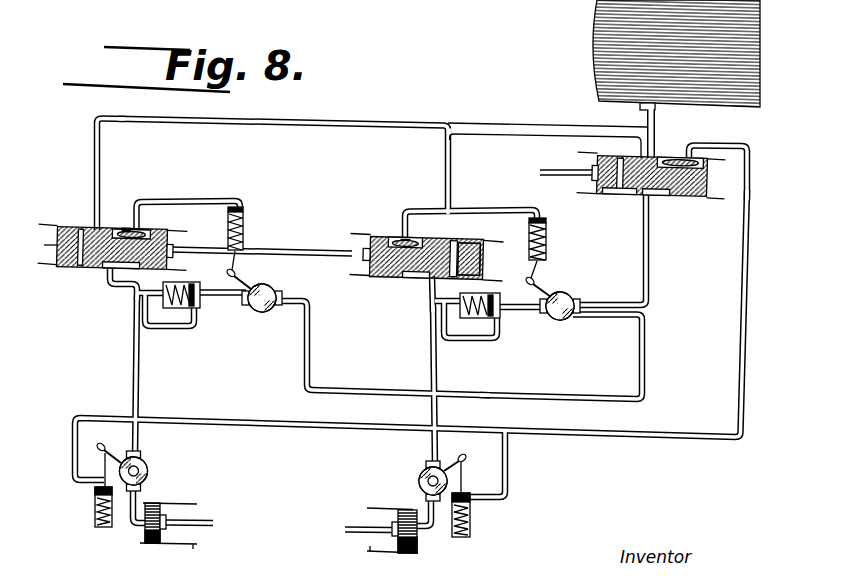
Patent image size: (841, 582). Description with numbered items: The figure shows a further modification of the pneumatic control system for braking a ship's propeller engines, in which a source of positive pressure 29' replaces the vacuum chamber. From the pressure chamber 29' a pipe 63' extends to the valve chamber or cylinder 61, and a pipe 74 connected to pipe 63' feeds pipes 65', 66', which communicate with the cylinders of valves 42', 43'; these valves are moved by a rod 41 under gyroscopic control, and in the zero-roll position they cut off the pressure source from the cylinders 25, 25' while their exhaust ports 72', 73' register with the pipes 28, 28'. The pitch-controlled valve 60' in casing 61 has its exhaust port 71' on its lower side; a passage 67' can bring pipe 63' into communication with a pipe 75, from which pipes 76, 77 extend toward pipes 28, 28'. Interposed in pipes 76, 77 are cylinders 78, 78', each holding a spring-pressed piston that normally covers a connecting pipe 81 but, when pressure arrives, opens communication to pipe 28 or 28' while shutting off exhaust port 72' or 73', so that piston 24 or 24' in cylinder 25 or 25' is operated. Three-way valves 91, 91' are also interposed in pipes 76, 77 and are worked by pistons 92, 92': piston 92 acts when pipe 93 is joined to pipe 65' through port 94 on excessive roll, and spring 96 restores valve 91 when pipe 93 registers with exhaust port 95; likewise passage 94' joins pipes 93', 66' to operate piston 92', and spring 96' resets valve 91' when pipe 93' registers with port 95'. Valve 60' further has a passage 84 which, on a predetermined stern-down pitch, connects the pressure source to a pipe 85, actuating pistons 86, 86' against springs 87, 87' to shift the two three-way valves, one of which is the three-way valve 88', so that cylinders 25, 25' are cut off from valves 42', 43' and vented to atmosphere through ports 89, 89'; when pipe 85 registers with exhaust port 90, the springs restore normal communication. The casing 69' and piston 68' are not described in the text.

The source of positive pressure 29' is at (676, 53).
The pipe 63' is at (627, 130).
The pipe 74 is at (390, 122).
The pipe 66' is at (118, 175).
The pipe 65' is at (547, 142).
The pipe 93' is at (189, 205).
The pipe 93 is at (471, 213).
The piston 92' is at (253, 229).
The piston 92 is at (555, 243).
The spring 96' is at (255, 232).
The spring 96 is at (553, 242).
The valve casing 69' is at (112, 237).
The port 95' is at (117, 217).
The exhaust port 95 is at (418, 221).
The passage 94' is at (144, 222).
The port 94 is at (391, 224).
The valve 43' is at (35, 249).
The rod 41 is at (320, 240).
The cylinder 78' is at (204, 288).
The cylinder 78 is at (502, 318).
The exhaust port 73' is at (112, 287).
The three-way valve 91' is at (264, 288).
The three-way valve 91 is at (556, 293).
The pipe 81 is at (485, 334).
The pipe 28' is at (124, 409).
The pipe 28 is at (444, 415).
The pipe 77 is at (311, 338).
The piston 68' is at (476, 242).
The valve 42' is at (430, 256).
The exhaust port 72' is at (414, 293).
The pipe 76 is at (605, 316).
The pipe 75 is at (650, 258).
The cylindrical casing 61 is at (620, 157).
The passage 67' is at (620, 208).
The exhaust port 71' is at (670, 209).
The passage 84 is at (667, 151).
The exhaust port 90 is at (692, 150).
The valve 60' is at (658, 175).
The pipe 85 is at (739, 435).
The three-way valve 88' is at (282, 471).
The port 89' is at (158, 480).
The port 89 is at (406, 486).
The piston 86' is at (77, 507).
The piston 86 is at (478, 515).
The spring 87' is at (89, 526).
The spring 87 is at (474, 529).
The piston 24' is at (156, 541).
The piston 24 is at (407, 540).
The cylinder 25' is at (187, 547).
The cylinder 25 is at (371, 552).